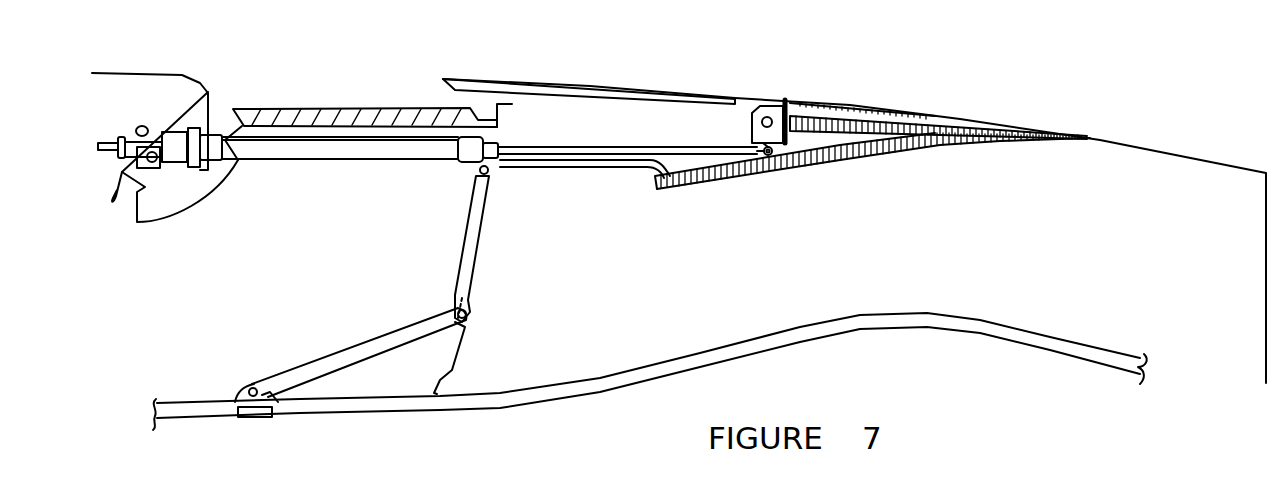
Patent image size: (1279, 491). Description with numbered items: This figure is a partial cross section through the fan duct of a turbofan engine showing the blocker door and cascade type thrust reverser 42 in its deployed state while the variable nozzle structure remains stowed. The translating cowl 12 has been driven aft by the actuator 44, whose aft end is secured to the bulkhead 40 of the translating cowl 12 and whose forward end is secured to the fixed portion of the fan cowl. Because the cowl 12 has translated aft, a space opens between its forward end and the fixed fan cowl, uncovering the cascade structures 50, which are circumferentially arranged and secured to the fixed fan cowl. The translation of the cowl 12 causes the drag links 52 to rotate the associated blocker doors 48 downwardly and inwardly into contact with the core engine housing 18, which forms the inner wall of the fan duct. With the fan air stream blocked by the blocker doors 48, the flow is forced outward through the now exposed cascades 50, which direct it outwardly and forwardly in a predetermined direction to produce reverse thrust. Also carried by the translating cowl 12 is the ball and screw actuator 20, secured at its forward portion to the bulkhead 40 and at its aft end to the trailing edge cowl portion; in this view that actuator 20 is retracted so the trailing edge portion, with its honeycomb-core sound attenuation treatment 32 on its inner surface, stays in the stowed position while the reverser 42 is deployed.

The translating fan cowl 12 is at (666, 92).
The core engine housing 18 is at (978, 316).
The ball and screw actuator 20 is at (887, 127).
The sound attenuation treatment 32 is at (1060, 137).
The bulkhead 40 is at (795, 158).
The thrust reverser 42 is at (262, 245).
The actuator 44 is at (373, 152).
The blocker doors 48 is at (478, 233).
The cascade structures 50 is at (283, 108).
The drag links 52 is at (388, 336).